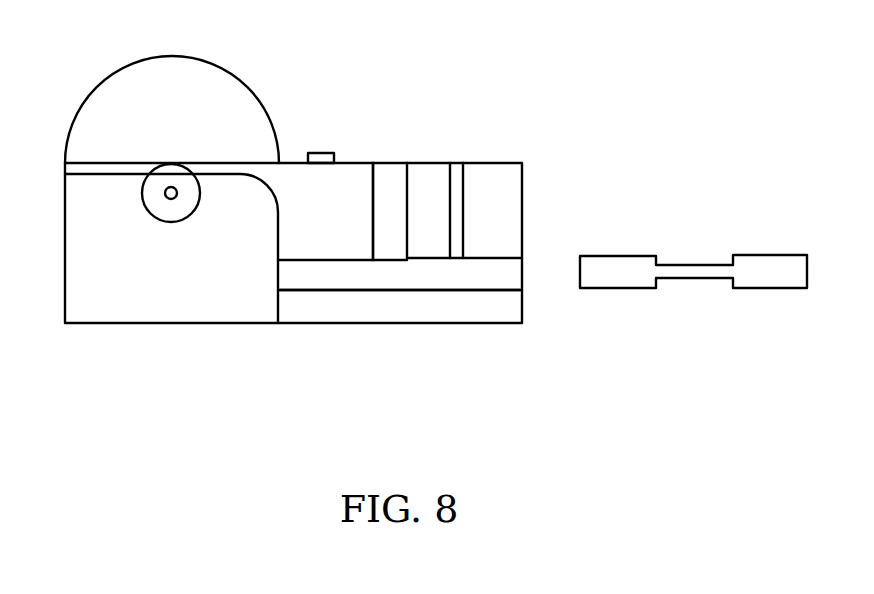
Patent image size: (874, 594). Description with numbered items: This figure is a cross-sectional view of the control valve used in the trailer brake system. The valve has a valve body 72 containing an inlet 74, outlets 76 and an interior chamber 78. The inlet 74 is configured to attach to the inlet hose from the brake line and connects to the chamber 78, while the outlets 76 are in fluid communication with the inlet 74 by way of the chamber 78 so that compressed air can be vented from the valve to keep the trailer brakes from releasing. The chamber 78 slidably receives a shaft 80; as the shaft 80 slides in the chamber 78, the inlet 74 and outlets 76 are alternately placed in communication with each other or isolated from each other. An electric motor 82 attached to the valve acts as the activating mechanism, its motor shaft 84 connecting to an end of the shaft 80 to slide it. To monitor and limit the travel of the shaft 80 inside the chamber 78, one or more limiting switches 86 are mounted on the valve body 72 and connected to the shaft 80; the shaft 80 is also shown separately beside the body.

The valve body 72 is at (433, 312).
The inlet 74 is at (385, 180).
The outlets 76 is at (456, 180).
The interior chamber 78 is at (328, 282).
The shaft 80 is at (698, 262).
The electric motor 82 is at (197, 90).
The motor shaft 84 is at (165, 199).
The limiting switches 86 is at (320, 152).